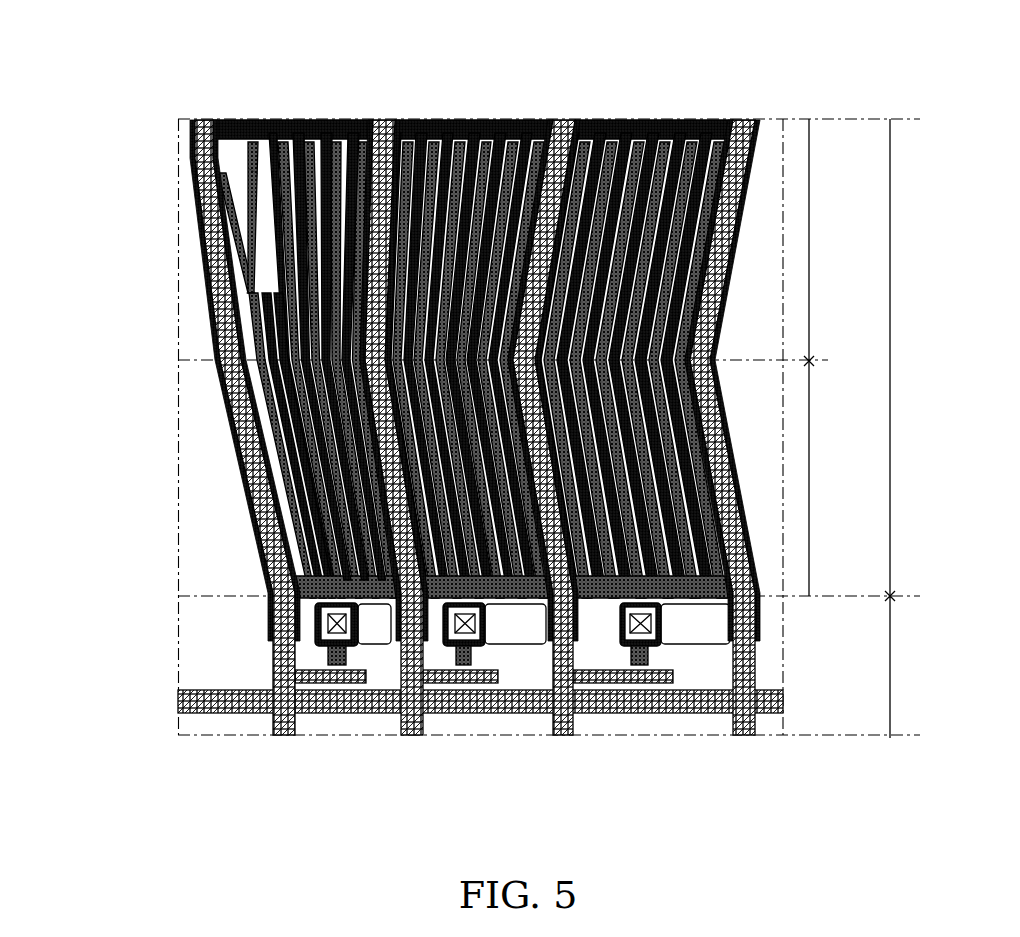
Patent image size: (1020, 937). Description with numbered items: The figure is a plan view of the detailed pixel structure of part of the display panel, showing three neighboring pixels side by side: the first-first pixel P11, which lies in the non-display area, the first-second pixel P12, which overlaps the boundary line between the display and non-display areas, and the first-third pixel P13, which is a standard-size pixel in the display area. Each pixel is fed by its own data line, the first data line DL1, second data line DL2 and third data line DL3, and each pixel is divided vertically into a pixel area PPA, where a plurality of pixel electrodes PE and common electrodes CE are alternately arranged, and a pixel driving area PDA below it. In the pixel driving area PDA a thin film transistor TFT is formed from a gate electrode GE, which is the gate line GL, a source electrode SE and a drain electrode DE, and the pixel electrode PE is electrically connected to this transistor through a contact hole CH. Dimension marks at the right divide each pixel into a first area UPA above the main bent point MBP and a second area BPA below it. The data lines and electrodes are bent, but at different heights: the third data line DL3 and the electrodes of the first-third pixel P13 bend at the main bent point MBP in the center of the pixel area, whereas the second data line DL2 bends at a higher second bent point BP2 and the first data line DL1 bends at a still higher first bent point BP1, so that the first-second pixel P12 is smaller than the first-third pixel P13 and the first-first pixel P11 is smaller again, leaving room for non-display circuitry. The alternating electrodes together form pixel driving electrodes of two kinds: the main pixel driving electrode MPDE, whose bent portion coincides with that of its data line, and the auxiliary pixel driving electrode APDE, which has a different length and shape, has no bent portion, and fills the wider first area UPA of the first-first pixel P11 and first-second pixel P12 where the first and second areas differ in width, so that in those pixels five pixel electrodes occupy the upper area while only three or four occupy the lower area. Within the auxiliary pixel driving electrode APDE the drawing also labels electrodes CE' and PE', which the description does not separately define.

The first-first pixel P11 is at (221, 431).
The first-second pixel P12 is at (459, 78).
The first-third pixel P13 is at (639, 354).
The first data line DL1 is at (193, 108).
The second data line DL2 is at (371, 108).
The third data line DL3 is at (549, 108).
The main pixel driving electrode MPDE is at (639, 314).
The pixel electrode PE is at (636, 323).
The common electrode CE is at (641, 332).
The auxiliary pixel driving electrode APDE is at (201, 359).
The auxiliary common electrode CE' is at (178, 233).
The auxiliary pixel electrode branch PE' is at (180, 217).
The first bent point BP1 is at (237, 166).
The second bent point BP2 is at (240, 290).
The contact hole CH is at (307, 608).
The gate line GL is at (200, 695).
The source electrode SE is at (303, 675).
The drain electrode DE is at (329, 657).
The gate electrode GE is at (290, 788).
The thin film transistor TFT is at (269, 719).
The first area UPA is at (834, 239).
The second area BPA is at (834, 478).
The main bent point MBP is at (840, 362).
The pixel area PPA is at (913, 357).
The pixel driving area PDA is at (913, 664).